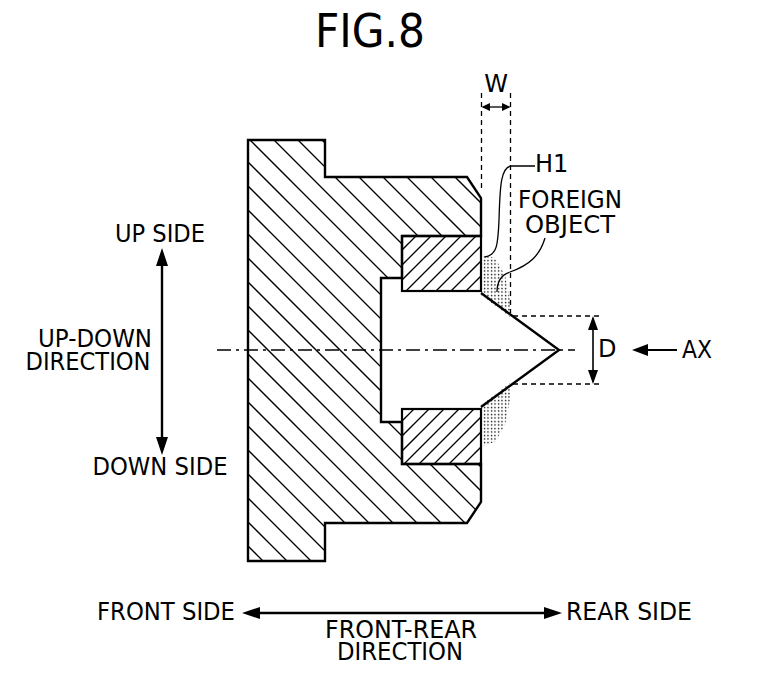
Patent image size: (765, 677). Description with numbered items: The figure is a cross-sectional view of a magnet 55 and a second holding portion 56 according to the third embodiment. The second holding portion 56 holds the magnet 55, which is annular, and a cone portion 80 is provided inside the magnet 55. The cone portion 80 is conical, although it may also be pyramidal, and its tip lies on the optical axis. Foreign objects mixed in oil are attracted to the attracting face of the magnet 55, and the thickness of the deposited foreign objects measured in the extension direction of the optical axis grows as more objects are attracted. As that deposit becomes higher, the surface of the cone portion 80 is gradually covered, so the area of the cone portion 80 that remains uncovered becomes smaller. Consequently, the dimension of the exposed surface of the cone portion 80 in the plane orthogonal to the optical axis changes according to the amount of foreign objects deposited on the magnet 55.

The second holding portion 56 is at (269, 140).
The magnet 55 is at (423, 247).
The cone portion 80 is at (532, 345).